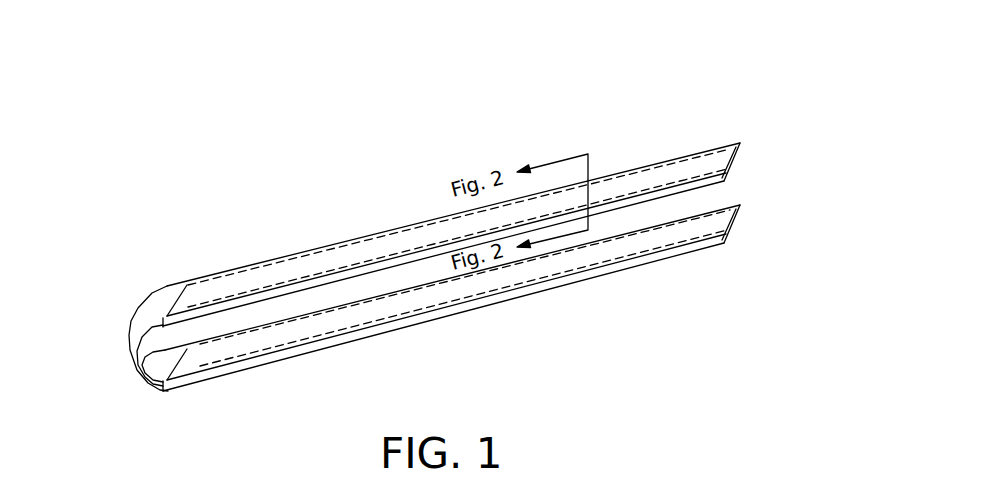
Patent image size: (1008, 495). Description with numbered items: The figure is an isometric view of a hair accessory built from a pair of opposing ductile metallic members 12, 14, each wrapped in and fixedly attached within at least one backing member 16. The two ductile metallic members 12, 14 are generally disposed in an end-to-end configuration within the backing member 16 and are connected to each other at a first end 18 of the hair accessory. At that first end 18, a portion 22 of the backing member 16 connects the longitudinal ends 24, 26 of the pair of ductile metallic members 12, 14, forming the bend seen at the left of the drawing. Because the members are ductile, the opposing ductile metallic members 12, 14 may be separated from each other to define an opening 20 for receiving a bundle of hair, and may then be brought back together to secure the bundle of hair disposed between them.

The ductile metallic member 12 is at (611, 188).
The ductile metallic member 14 is at (632, 257).
The backing member 16 is at (740, 165).
The first end 18 is at (138, 284).
The opening 20 is at (716, 198).
The portion of the backing member 22 is at (129, 323).
The longitudinal end 24 is at (195, 282).
The longitudinal end 26 is at (206, 364).